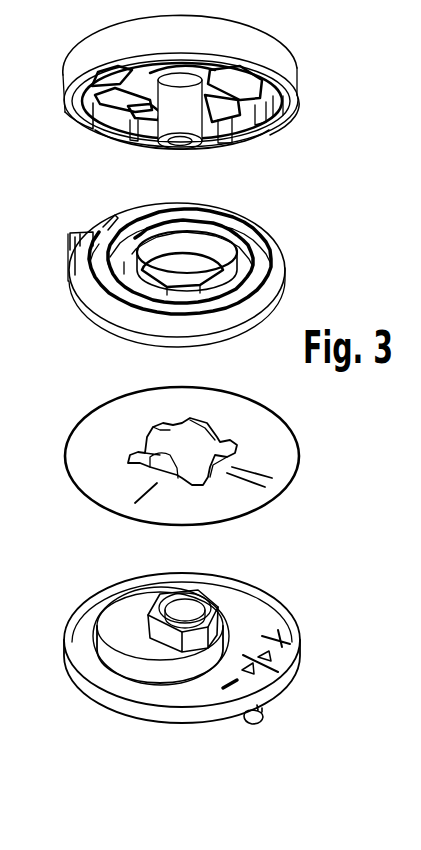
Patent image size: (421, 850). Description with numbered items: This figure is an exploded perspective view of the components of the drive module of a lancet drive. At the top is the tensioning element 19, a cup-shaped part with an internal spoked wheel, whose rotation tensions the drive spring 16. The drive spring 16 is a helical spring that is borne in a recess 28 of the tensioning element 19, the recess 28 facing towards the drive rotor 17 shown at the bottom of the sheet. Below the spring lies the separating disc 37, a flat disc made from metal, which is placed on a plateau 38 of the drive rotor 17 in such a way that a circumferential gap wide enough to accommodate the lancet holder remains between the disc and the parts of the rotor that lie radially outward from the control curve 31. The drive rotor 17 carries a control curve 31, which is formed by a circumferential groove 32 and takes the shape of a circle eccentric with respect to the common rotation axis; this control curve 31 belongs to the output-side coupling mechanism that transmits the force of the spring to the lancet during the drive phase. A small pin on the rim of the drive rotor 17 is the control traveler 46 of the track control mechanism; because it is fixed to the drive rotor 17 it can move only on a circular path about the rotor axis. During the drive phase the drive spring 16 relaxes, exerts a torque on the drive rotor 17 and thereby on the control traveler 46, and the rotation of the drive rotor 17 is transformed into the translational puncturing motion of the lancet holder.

The tensioning element 19 is at (280, 57).
The recess 28 is at (237, 107).
The drive spring 16 is at (97, 308).
The separating disc 37 is at (280, 447).
The drive rotor 17 is at (113, 705).
The control curve 31 is at (85, 633).
The plateau 38 is at (120, 606).
The circumferential groove 32 is at (238, 628).
The control traveler 46 is at (254, 725).